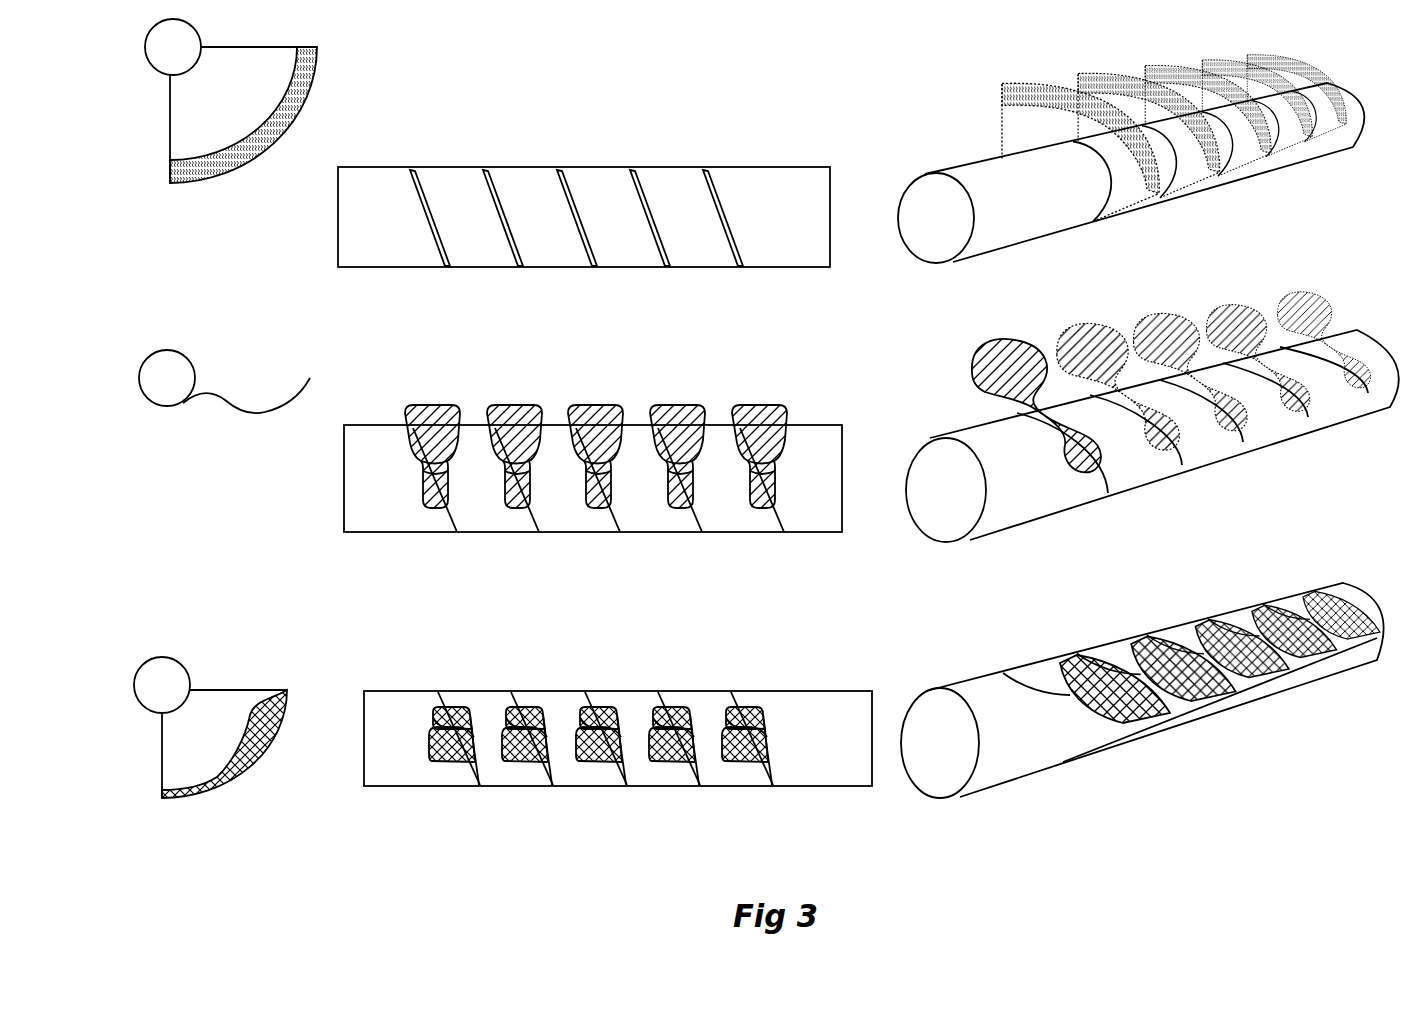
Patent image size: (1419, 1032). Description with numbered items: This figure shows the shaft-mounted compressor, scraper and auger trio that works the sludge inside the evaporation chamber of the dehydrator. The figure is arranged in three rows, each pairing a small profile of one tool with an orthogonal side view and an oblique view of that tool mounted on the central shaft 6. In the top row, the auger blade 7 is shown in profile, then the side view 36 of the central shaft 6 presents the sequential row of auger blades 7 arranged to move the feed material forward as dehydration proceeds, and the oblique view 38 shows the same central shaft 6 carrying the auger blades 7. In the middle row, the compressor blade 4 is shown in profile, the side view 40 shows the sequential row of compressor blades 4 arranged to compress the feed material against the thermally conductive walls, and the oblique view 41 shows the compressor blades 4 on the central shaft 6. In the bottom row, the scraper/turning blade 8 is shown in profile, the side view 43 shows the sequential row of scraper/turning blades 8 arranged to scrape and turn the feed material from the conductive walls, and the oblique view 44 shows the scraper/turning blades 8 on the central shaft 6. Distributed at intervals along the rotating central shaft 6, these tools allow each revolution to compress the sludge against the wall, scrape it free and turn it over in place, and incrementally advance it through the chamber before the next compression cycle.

The auger blade 7 is at (163, 135).
The side view of the central shaft with the row of auger blades 36 is at (773, 158).
The central shaft 6 is at (973, 177).
The oblique view of the central shaft and auger blades 38 is at (1215, 195).
The compressor blade 4 is at (150, 413).
The side view of the central shaft with the row of compressor blades 40 is at (692, 538).
The oblique view of the central shaft and compressor blades 41 is at (1227, 465).
The scraper/turning blade 8 is at (175, 652).
The side view of the central shaft with the row of scraper/turning blades 43 is at (653, 792).
The oblique view of the central shaft and scraper/turning blades 44 is at (1192, 722).